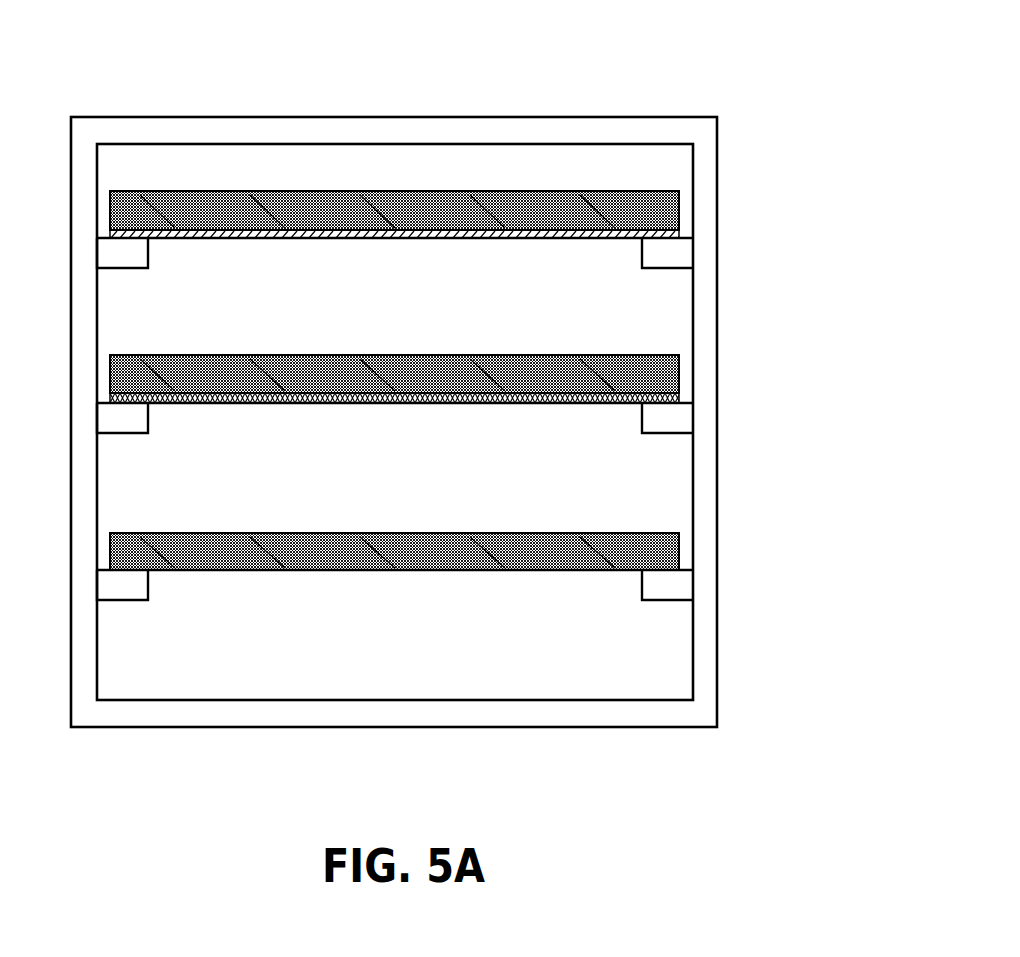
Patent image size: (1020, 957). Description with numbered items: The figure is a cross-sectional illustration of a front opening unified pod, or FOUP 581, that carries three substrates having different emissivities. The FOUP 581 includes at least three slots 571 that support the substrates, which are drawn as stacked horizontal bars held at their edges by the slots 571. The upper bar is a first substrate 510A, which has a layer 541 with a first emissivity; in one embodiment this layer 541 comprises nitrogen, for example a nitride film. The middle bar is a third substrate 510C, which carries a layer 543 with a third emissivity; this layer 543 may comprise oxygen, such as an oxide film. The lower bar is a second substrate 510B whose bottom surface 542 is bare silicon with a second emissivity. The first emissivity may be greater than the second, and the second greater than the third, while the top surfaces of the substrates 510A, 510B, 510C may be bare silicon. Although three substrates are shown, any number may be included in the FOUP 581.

The front opening unified pod (FOUP) 581 is at (706, 126).
The slots 571 is at (665, 263).
The first substrate 510A is at (283, 208).
The second substrate 510B is at (397, 553).
The third substrate 510C is at (421, 372).
The layer 541 is at (192, 241).
The bottom surface 542 is at (264, 570).
The layer 543 is at (207, 407).